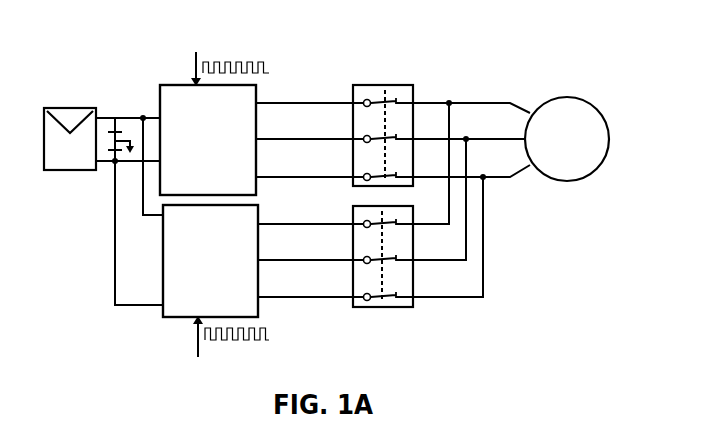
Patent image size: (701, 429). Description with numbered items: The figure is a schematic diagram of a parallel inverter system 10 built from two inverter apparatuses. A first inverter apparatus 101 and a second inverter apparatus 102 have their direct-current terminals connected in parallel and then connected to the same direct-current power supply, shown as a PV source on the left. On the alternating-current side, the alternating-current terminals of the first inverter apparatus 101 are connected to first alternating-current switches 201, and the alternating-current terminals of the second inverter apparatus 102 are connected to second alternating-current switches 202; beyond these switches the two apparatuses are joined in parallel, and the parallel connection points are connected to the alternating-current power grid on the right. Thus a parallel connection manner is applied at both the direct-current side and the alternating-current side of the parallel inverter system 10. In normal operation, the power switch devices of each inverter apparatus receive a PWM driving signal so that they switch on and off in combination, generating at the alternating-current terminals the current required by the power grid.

The parallel inverter system 10 is at (286, 48).
The first inverter apparatus 101 is at (263, 90).
The second inverter apparatus 102 is at (259, 215).
The first alternating-current switches 201 is at (397, 84).
The second alternating-current switches 202 is at (392, 207).